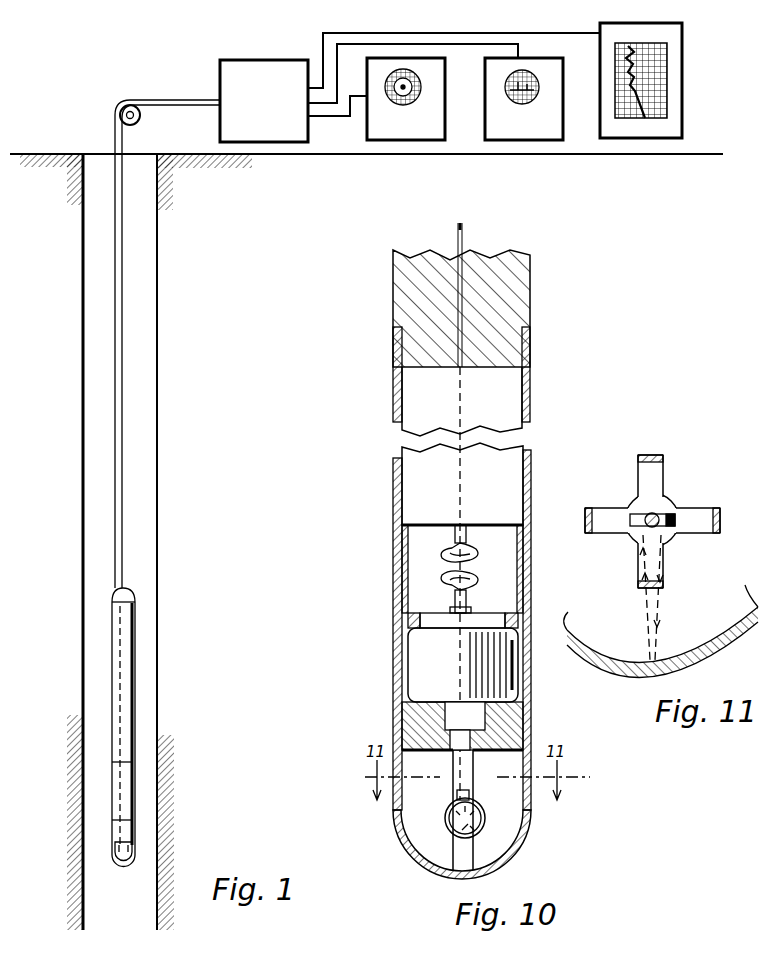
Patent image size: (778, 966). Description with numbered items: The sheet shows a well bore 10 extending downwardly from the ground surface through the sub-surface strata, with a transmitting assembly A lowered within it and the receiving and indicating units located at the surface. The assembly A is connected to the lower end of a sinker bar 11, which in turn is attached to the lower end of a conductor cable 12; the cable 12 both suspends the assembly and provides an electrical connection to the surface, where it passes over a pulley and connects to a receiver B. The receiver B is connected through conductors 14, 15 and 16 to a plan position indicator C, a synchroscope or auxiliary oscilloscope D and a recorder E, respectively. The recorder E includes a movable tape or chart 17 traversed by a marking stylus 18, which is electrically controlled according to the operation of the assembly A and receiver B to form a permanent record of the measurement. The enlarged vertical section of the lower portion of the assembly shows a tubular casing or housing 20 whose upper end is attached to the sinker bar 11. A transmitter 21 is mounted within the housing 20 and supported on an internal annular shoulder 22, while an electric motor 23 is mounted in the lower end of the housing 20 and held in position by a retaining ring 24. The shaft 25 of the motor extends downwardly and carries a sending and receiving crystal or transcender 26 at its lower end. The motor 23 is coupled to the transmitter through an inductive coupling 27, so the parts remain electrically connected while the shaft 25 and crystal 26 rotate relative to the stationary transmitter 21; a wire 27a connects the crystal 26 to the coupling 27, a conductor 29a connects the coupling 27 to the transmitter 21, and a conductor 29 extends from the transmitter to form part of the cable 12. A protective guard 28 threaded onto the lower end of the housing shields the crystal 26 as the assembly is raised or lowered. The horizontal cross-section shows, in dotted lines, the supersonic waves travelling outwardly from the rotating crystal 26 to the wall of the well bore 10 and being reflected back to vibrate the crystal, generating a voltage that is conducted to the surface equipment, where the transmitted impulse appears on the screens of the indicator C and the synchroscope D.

In FIG. 1, the well bore 10 is at (157, 322).
In FIG. 11, the well bore 10 is at (612, 676).
In FIG. 1, the sinker bar 11 is at (135, 650).
In FIG. 10, the sinker bar 11 is at (515, 275).
In FIG. 1, the conductor cable 12 is at (122, 400).
In FIG. 1, the conductor 14 is at (328, 118).
In FIG. 1, the conductor 15 is at (450, 44).
In FIG. 1, the conductor 16 is at (384, 17).
In FIG. 1, the movable tape or chart 17 is at (660, 57).
In FIG. 1, the marking stylus 18 is at (653, 107).
In FIG. 1, the tubular casing or housing 20 is at (120, 800).
In FIG. 10, the tubular casing or housing 20 is at (530, 388).
In FIG. 10, the transmitter 21 is at (505, 468).
In FIG. 10, the internal annular shoulder 22 is at (400, 530).
In FIG. 10, the electric motor 23 is at (425, 655).
In FIG. 10, the retaining ring 24 is at (408, 621).
In FIG. 10, the motor shaft 25 is at (470, 762).
In FIG. 11, the motor shaft 25 is at (660, 505).
In FIG. 10, the sending and receiving crystal or transcender 26 is at (487, 818).
In FIG. 11, the sending and receiving crystal or transcender 26 is at (672, 532).
In FIG. 10, the inductive coupling 27 is at (455, 565).
In FIG. 10, the wire 27a is at (440, 680).
In FIG. 11, the wire 27a is at (645, 507).
In FIG. 1, the protective element or guard 28 is at (135, 848).
In FIG. 10, the protective element or guard 28 is at (522, 848).
In FIG. 11, the protective element or guard 28 is at (650, 455).
In FIG. 10, the conductor 29 is at (462, 232).
In FIG. 10, the conductor or wire 29a is at (455, 488).
In FIG. 1, the transmitting assembly A is at (135, 778).
In FIG. 1, the receiver B is at (262, 60).
In FIG. 1, the plan position indicator C is at (398, 140).
In FIG. 1, the synchroscope or auxiliary oscilloscope D is at (524, 140).
In FIG. 1, the recorder E is at (661, 103).